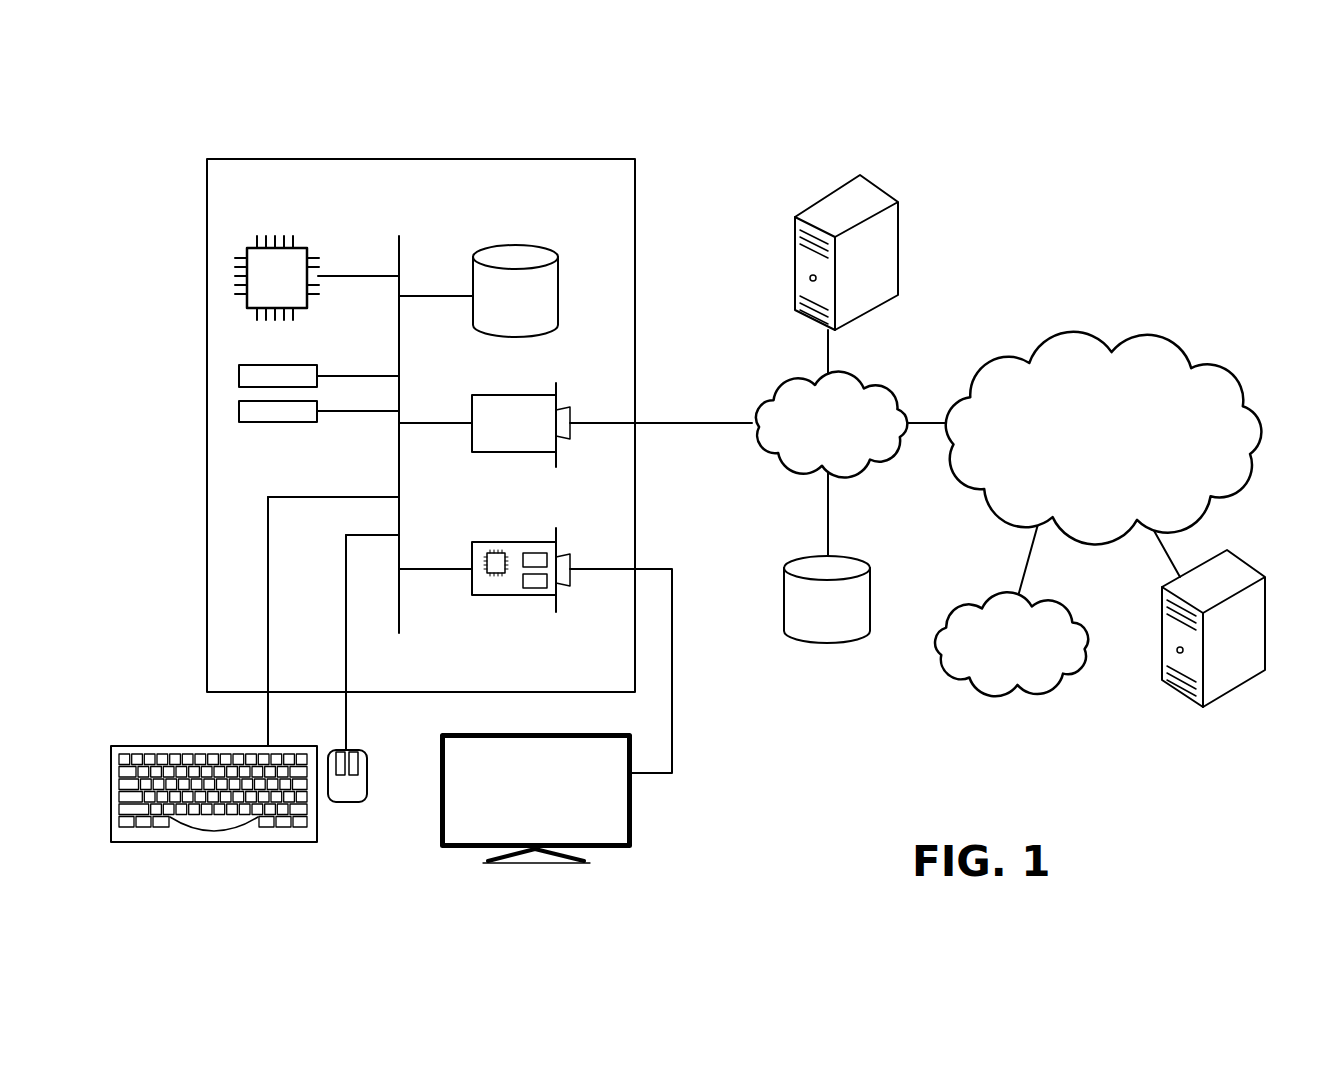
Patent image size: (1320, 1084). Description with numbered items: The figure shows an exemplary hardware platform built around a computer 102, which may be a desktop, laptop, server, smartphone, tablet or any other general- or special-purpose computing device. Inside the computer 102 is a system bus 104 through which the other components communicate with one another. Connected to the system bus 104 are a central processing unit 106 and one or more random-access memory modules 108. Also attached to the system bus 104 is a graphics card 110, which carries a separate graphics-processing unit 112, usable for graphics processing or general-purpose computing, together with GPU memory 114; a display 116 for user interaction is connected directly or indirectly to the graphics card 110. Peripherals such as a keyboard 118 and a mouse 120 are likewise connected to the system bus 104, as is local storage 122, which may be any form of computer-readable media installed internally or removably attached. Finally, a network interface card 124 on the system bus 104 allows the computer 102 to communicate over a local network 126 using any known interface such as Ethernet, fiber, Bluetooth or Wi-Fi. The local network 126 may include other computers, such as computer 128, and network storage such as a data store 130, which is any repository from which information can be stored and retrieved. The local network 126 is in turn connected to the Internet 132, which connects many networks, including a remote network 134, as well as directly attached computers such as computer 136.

The computer 102 is at (585, 158).
The system bus 104 is at (400, 245).
The central processing unit 106 is at (300, 240).
The random-access memory modules 108 is at (317, 372).
The graphics card 110 is at (472, 552).
The graphics-processing unit 112 is at (495, 571).
The GPU memory 114 is at (533, 588).
The display 116 is at (632, 827).
The keyboard 118 is at (215, 842).
The mouse 120 is at (347, 802).
The local storage 122 is at (560, 278).
The network interface card 124 is at (472, 400).
The local network 126 is at (883, 385).
The computer 128 is at (882, 200).
The data store 130 is at (860, 560).
The Internet 132 is at (1147, 343).
The remote network 134 is at (1070, 603).
The computer 136 is at (1240, 558).